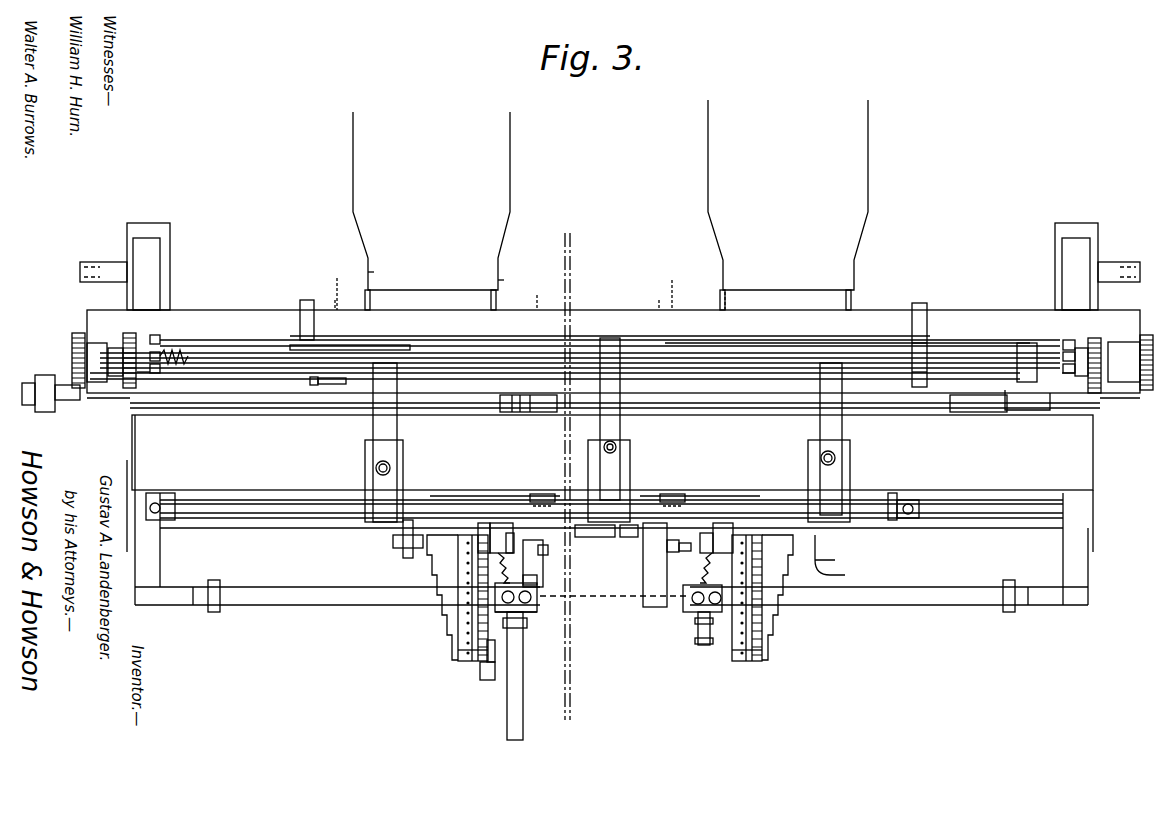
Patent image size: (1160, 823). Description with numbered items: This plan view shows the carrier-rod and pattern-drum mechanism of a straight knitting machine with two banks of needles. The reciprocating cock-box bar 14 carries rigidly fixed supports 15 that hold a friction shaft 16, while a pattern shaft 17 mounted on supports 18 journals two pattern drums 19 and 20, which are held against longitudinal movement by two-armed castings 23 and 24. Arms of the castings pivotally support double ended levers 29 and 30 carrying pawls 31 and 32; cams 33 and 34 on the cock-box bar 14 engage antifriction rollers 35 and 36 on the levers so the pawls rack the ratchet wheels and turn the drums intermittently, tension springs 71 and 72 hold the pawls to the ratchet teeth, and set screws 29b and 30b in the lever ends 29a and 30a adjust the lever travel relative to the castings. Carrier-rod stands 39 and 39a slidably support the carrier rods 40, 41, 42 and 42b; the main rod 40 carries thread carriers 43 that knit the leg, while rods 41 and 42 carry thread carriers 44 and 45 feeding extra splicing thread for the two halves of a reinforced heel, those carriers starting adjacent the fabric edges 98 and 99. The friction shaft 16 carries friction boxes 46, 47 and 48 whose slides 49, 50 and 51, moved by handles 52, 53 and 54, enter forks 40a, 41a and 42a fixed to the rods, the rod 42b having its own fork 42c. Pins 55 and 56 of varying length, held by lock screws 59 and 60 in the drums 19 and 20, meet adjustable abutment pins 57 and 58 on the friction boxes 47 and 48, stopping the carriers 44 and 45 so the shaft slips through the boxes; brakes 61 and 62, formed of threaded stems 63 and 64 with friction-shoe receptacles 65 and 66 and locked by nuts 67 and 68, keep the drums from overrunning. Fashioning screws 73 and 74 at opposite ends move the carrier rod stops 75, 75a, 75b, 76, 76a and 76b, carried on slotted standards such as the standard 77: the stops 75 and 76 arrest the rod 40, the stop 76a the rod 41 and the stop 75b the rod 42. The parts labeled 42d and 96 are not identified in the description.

The cock-box bar 14 is at (922, 528).
The supports 15 is at (172, 494).
The friction shaft 16 is at (246, 510).
The pattern shaft 17 is at (287, 592).
The supports 18 is at (1140, 342).
The pattern drum 19 is at (489, 662).
The pattern drum 20 is at (750, 660).
The two-armed casting 23 is at (530, 614).
The two-armed casting 24 is at (688, 613).
The double ended lever 29 is at (537, 580).
The end of lever 29a is at (521, 630).
The set screw 29b is at (515, 660).
The double ended lever 30 is at (700, 628).
The end of lever 30a is at (705, 640).
The set screw 30b is at (710, 645).
The pawl 31 is at (486, 523).
The pawl 32 is at (735, 540).
The cam 33 is at (468, 495).
The cam 34 is at (656, 495).
The antifriction roller 35 is at (548, 494).
The antifriction roller 36 is at (680, 494).
The carrier-rod stand 39 is at (304, 300).
The carrier-rod stand 39a is at (920, 303).
The main carrier rod 40 is at (222, 340).
The fork 40a is at (616, 322).
The carrier rod 41 is at (455, 353).
The fork 41a is at (805, 343).
The carrier rod 42 is at (470, 363).
The fork 42a is at (400, 345).
The carrier rod 42b is at (343, 384).
The fork 42c is at (316, 385).
The pin 42d is at (659, 300).
The thread carrier 43 is at (372, 298).
The thread carrier 44 is at (496, 296).
The thread carrier 45 is at (337, 290).
The friction box 46 is at (630, 456).
The friction box 47 is at (850, 443).
The friction box 48 is at (403, 447).
The slide 49 is at (620, 418).
The slide 50 is at (842, 422).
The slide 51 is at (397, 426).
The handle 52 is at (616, 447).
The handle 53 is at (835, 461).
The handle 54 is at (390, 468).
The pins 55 is at (440, 623).
The pins 56 is at (790, 650).
The abutment pin 57 is at (840, 556).
The abutment pin 58 is at (410, 558).
The lock screw 59 is at (465, 660).
The lock screw 60 is at (762, 655).
The brake 61 is at (512, 533).
The brake 62 is at (725, 530).
The threaded stem 63 is at (548, 550).
The threaded stem 64 is at (653, 565).
The receptacle 65 is at (500, 523).
The receptacle 66 is at (720, 535).
The nut 67 is at (535, 570).
The nut 68 is at (690, 551).
The tension spring 71 is at (498, 568).
The tension spring 72 is at (659, 557).
The fashioning screw 73 is at (178, 356).
The fashioning screw 74 is at (1045, 355).
The carrier rod stop 75 is at (160, 352).
The carrier rod stop 75a is at (152, 338).
The carrier rod stop 75b is at (155, 374).
The carrier rod stop 76 is at (1068, 340).
The carrier rod stop 76a is at (1090, 348).
The carrier rod stop 76b is at (1065, 376).
The standard 77 is at (130, 336).
The handle 96 is at (51, 371).
The fabric edge 98 is at (504, 280).
The fabric edge 99 is at (374, 272).